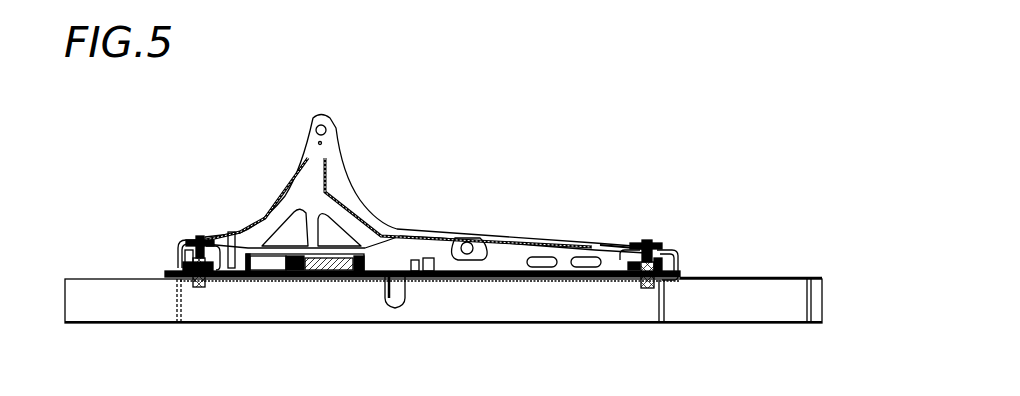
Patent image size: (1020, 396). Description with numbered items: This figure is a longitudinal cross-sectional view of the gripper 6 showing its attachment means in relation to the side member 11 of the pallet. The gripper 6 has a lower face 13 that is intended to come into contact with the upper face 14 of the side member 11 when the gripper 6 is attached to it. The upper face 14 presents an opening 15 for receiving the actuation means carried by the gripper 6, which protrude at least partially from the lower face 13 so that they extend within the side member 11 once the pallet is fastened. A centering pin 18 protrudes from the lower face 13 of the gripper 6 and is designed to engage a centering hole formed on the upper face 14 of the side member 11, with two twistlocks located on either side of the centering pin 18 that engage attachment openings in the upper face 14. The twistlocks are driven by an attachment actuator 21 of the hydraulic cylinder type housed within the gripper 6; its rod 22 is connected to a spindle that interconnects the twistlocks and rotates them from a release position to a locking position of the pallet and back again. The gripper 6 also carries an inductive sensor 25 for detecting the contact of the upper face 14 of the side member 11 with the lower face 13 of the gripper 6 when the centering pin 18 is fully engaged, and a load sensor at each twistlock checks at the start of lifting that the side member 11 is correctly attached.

The gripper 6 is at (366, 176).
The side member 11 is at (768, 304).
The lower face 13 is at (551, 277).
The upper face 14 is at (723, 276).
The opening 15 is at (510, 281).
The centering pin 18 is at (410, 292).
The attachment actuator 21 is at (275, 273).
The rod 22 is at (329, 271).
The inductive sensor 25 is at (434, 252).